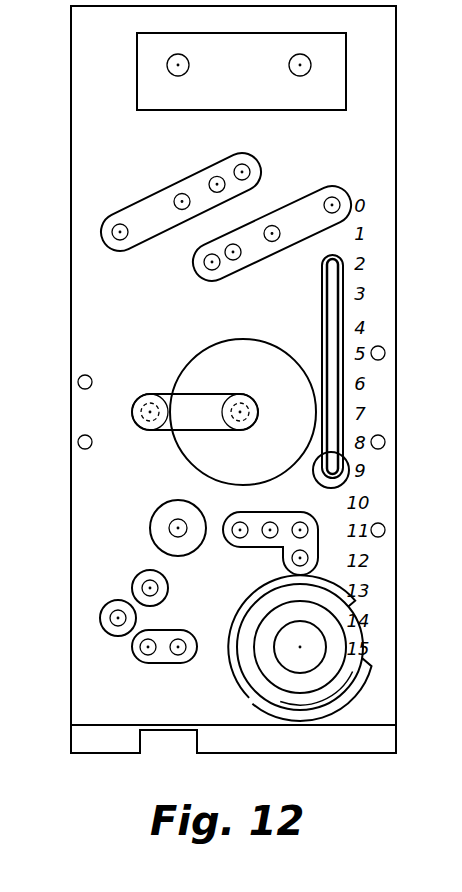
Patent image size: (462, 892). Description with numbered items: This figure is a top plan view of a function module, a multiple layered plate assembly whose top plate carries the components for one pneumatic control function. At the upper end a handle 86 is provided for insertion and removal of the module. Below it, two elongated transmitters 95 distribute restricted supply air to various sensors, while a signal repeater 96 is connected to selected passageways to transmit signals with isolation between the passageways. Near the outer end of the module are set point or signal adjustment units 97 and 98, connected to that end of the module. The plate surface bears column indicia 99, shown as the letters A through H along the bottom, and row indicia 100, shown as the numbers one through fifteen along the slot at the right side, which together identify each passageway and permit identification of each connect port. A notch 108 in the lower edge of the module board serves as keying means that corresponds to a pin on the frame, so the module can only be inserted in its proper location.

The handle 86 is at (346, 78).
The transmitters 95 is at (240, 192).
The signal repeater 96 is at (290, 322).
The set point or signal adjustment unit 97 is at (329, 646).
The set point or signal adjustment unit 98 is at (140, 573).
The column indicia 99 is at (105, 688).
The row indicia 100 is at (372, 648).
The notches 108 is at (197, 745).